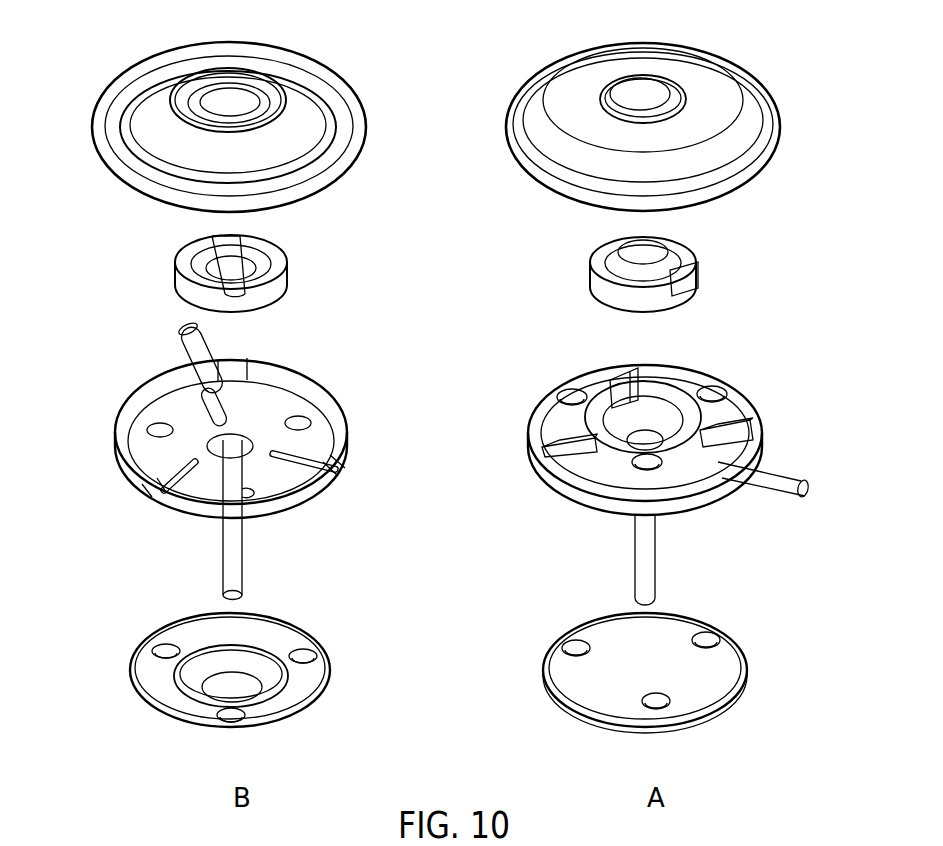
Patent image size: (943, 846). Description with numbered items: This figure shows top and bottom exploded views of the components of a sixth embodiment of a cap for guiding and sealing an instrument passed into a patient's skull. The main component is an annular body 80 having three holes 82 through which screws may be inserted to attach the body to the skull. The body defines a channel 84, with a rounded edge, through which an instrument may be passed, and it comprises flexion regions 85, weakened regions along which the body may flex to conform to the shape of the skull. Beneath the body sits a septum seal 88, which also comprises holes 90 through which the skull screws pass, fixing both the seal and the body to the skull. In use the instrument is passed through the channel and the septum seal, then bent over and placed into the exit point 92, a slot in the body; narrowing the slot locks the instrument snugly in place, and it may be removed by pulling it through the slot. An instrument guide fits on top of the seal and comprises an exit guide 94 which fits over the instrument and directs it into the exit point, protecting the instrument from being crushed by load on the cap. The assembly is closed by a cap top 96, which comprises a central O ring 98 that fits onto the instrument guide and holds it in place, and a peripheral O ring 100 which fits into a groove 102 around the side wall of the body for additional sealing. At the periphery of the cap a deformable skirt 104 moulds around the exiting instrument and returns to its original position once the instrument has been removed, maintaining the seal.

The annular body 80 is at (432, 460).
The holes 82 is at (718, 393).
The channel 84 is at (260, 490).
The flexion regions 85 is at (237, 405).
The septum seal 88 is at (243, 653).
The holes 90 is at (163, 648).
The exit point 92 is at (637, 385).
The exit guide 94 is at (697, 254).
The cap top 96 is at (733, 60).
The central O ring 98 is at (270, 98).
The peripheral O ring 100 is at (318, 153).
The groove 102 is at (137, 397).
The deformable skirt 104 is at (233, 113).